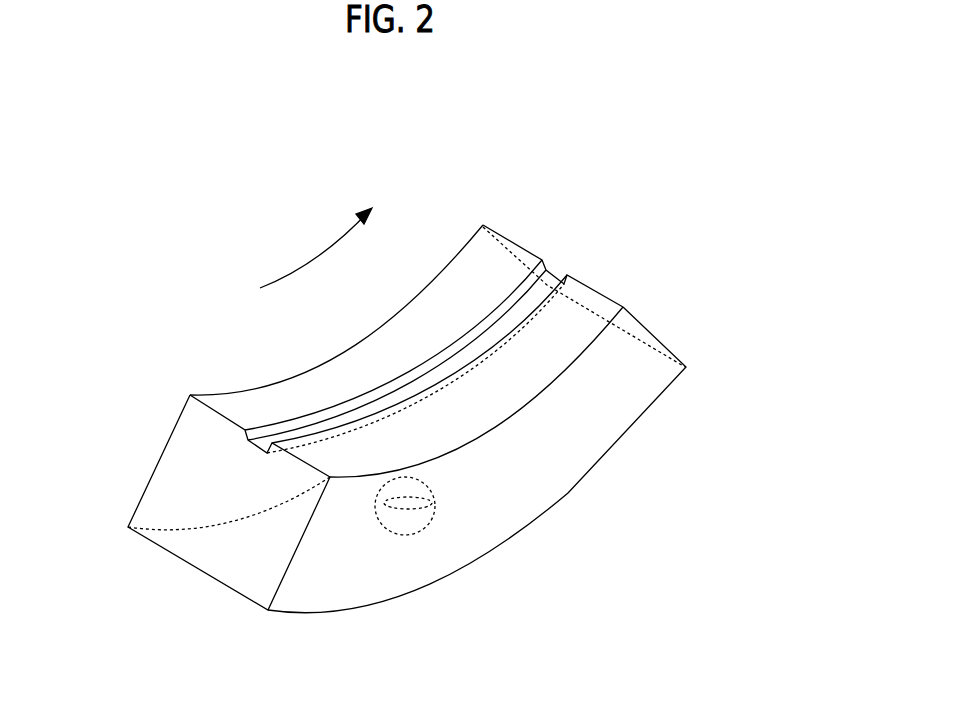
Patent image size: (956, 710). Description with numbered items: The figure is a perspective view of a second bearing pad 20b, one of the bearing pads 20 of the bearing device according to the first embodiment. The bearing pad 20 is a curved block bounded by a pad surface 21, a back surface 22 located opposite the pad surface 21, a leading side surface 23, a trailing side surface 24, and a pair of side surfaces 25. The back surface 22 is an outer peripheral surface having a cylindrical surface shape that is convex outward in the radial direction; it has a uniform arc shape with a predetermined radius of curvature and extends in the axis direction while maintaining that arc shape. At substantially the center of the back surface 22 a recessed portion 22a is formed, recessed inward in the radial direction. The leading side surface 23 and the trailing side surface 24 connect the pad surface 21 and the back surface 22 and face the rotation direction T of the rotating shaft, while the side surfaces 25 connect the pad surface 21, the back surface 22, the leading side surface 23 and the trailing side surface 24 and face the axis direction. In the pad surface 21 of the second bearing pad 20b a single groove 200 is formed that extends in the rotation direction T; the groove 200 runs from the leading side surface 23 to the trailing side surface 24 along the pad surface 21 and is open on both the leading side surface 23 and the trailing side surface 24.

The bearing pad 20 is at (663, 155).
The second bearing pad 20b is at (461, 352).
The pad surface 21 is at (267, 395).
The back surface 22 is at (350, 567).
The recessed portion 22a is at (437, 503).
The leading side surface 23 is at (217, 558).
The trailing side surface 24 is at (592, 302).
The side surfaces 25 is at (188, 472).
The groove 200 is at (552, 277).
The rotation direction T is at (317, 257).